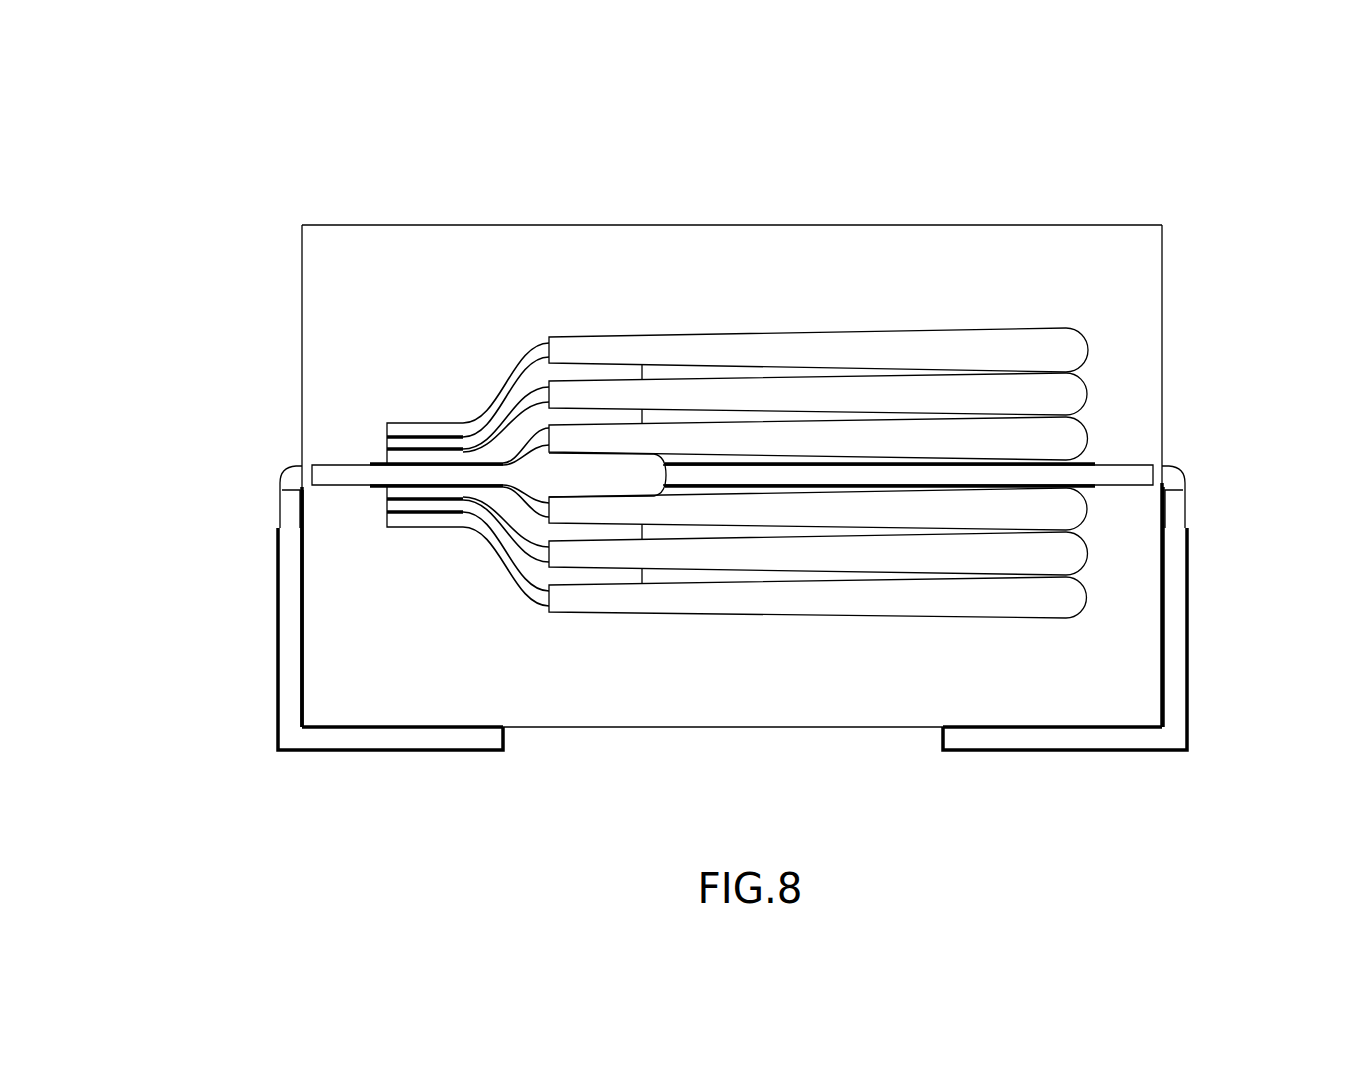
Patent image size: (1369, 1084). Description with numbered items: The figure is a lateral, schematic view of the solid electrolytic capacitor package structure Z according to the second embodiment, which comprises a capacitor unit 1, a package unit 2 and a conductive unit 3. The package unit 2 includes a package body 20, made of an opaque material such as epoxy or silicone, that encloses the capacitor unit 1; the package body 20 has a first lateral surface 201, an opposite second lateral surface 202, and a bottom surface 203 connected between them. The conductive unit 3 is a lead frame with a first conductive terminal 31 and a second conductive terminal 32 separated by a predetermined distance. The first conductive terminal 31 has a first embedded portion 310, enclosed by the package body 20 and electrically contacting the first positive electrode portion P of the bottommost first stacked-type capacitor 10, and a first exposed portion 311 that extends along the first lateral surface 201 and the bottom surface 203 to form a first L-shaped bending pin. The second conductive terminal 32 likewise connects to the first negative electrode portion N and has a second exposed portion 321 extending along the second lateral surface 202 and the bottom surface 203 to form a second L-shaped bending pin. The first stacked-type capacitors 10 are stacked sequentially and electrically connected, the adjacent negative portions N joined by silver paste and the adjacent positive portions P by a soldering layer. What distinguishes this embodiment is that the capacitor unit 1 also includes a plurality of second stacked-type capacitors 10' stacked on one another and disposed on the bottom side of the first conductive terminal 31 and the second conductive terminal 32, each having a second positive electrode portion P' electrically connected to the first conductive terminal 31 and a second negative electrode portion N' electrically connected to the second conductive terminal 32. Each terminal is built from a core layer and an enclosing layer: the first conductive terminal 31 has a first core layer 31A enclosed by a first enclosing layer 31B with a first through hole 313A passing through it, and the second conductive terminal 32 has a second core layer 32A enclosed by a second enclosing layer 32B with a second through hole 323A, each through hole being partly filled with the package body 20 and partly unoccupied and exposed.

The package unit 2 is at (880, 136).
The package body 20 is at (880, 218).
The first lateral surface 201 is at (302, 340).
The second lateral surface 202 is at (1163, 270).
The bottom surface 203 is at (645, 729).
The capacitor unit 1 is at (913, 458).
The first stacked-type capacitor 10 is at (888, 394).
The second stacked-type capacitor 10' is at (902, 553).
The conductive unit 3 is at (736, 589).
The first conductive terminal 31 is at (262, 694).
The first exposed portion 311 is at (288, 612).
The first core layer 31A is at (292, 508).
The first enclosing layer 31B is at (280, 556).
The first through hole 313A is at (298, 468).
The second conductive terminal 32 is at (1203, 706).
The second exposed portion 321 is at (1178, 670).
The second core layer 32A is at (1178, 500).
The second enclosing layer 32B is at (1190, 645).
The second through hole 323A is at (1175, 476).
The first embedded portion 310 is at (430, 478).
The first positive electrode portion P is at (493, 389).
The second positive electrode portion P' is at (489, 565).
The first negative electrode portion N is at (997, 288).
The second negative electrode portion N' is at (1003, 667).
The solid electrolytic capacitor package structure Z is at (279, 104).